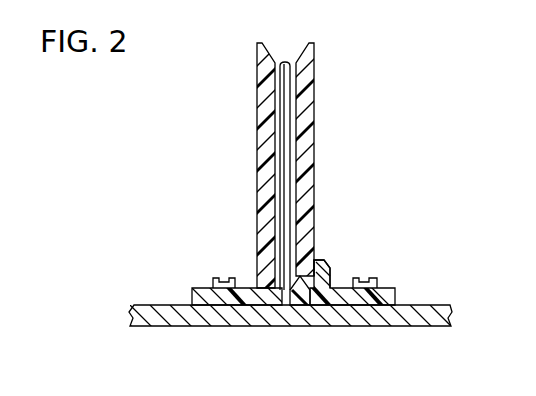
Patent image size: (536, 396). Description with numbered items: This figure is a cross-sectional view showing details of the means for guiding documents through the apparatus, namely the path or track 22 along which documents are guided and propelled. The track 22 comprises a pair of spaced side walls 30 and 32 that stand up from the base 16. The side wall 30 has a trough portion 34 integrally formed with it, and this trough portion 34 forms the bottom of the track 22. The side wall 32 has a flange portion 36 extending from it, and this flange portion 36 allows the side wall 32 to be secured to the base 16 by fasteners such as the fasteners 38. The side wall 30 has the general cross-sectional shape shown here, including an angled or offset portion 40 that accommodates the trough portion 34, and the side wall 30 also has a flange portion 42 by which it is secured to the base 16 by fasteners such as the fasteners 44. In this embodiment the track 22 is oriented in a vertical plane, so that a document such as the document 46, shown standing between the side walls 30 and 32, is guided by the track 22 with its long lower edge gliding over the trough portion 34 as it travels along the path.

The base 16 is at (196, 318).
The path 22 is at (254, 79).
The side wall 30 is at (316, 145).
The side wall 32 is at (257, 143).
The trough portion 34 is at (297, 298).
The flange portion 36 is at (192, 292).
The fasteners 38 is at (220, 278).
The angled or offset portion 40 is at (318, 264).
The flange portion 42 is at (392, 295).
The fasteners 44 is at (378, 282).
The document 46 is at (285, 62).